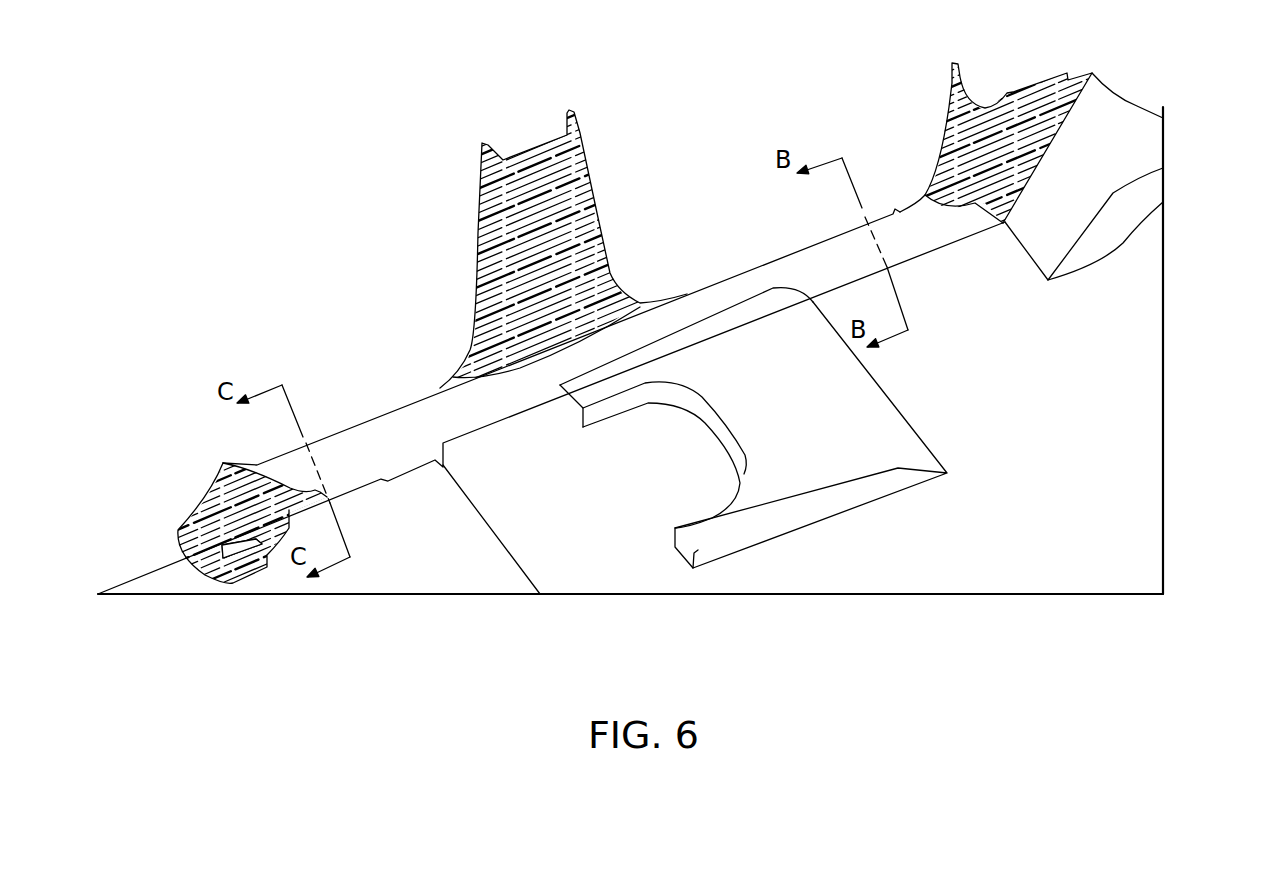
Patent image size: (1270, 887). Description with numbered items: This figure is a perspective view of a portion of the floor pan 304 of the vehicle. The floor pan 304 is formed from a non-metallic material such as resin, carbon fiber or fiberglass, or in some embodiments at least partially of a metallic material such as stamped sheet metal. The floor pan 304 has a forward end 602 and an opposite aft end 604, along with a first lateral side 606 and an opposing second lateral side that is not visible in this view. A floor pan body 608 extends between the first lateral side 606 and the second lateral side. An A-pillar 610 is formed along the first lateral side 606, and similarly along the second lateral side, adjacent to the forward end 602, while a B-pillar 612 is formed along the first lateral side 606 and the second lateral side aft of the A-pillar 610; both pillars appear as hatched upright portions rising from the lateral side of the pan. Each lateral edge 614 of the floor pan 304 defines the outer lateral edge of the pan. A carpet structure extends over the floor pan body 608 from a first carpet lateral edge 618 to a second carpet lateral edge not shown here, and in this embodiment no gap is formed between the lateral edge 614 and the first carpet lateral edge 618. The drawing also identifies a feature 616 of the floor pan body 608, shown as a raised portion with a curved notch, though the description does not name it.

The floor pan 304 is at (643, 77).
The forward end 602 is at (1153, 89).
The aft end 604 is at (176, 468).
The first lateral side 606 is at (750, 245).
The floor pan body 608 is at (1004, 367).
The A-pillar 610 is at (952, 120).
The B-pillar 612 is at (560, 274).
The lateral edge 614 is at (888, 207).
The locating tab 616 is at (743, 327).
The first carpet lateral edge 618 is at (831, 236).